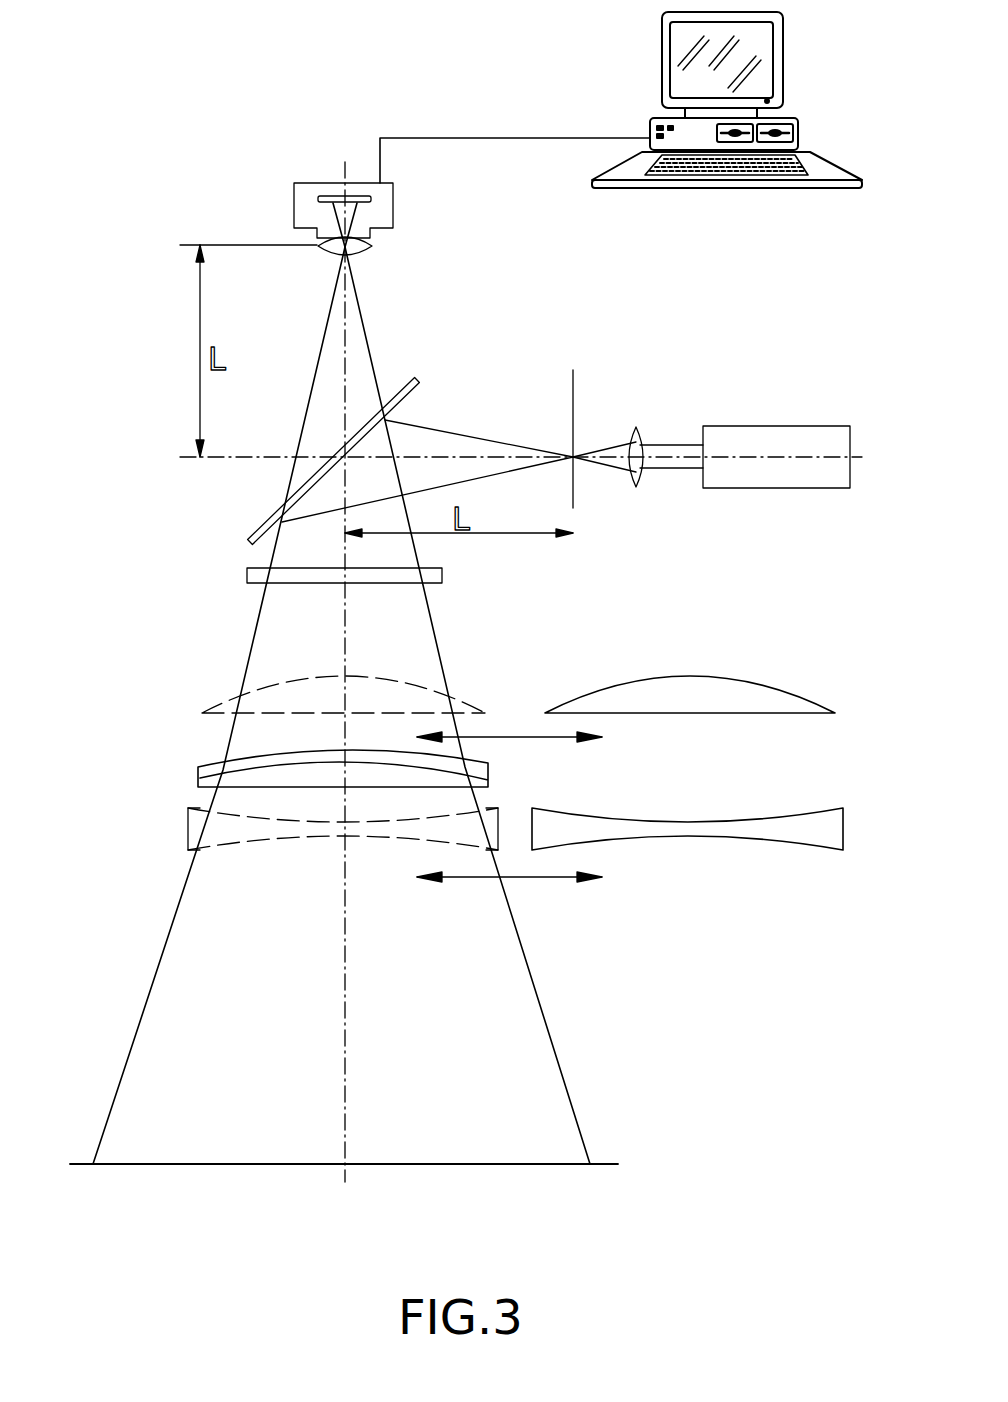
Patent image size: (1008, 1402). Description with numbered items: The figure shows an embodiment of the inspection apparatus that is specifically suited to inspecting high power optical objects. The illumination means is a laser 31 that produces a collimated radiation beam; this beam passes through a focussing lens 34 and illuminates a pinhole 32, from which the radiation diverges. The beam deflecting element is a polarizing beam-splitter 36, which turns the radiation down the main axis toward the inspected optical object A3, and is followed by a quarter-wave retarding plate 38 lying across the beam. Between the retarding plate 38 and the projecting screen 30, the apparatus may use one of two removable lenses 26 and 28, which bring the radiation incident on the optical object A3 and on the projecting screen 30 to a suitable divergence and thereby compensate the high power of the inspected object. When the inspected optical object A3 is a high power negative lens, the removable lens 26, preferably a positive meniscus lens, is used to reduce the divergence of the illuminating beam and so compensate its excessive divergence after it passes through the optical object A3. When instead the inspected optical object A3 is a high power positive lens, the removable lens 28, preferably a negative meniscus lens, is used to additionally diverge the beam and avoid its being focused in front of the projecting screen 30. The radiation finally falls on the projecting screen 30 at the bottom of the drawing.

The removable lens 26 is at (262, 705).
The removable lens 28 is at (215, 833).
The projecting screen 30 is at (603, 1164).
The laser 31 is at (765, 426).
The pinhole 32 is at (578, 450).
The focussing lens 34 is at (640, 437).
The polarizing beam-splitter 36 is at (262, 535).
The retarding plate 38 is at (247, 574).
The optical object A3 is at (200, 778).